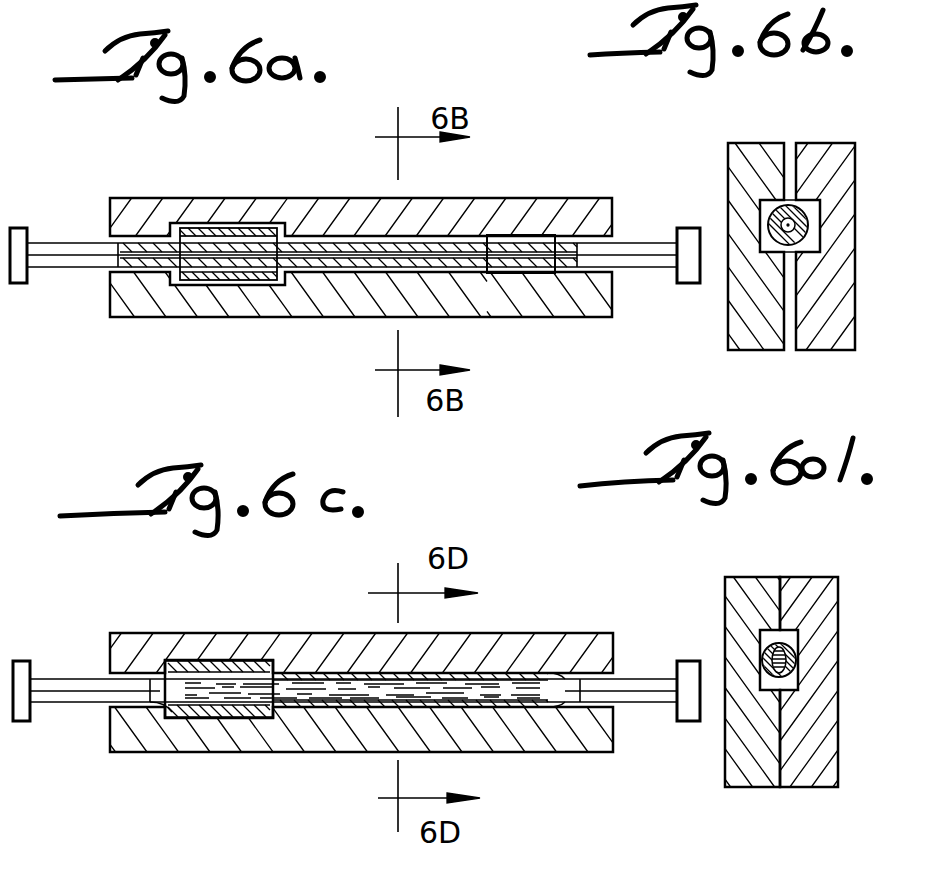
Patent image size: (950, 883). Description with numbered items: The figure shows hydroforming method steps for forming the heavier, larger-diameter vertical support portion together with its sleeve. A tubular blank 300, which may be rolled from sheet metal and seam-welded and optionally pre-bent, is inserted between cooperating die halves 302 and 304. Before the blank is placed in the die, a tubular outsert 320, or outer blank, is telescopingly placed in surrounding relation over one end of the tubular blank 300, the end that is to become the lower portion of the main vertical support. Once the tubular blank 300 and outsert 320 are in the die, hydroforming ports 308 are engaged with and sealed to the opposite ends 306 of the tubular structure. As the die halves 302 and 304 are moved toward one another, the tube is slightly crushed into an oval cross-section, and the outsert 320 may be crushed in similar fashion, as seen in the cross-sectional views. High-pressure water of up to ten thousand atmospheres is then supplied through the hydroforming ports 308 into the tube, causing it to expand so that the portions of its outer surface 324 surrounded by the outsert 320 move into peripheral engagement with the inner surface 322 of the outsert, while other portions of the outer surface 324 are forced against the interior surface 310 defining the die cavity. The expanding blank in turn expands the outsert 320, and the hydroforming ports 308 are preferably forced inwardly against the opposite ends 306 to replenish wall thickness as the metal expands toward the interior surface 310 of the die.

In FIG. 6A, the tubular blank 300 is at (160, 243).
In FIG. 6B, the tubular blank 300 is at (799, 244).
In FIG. 6C, the tubular blank 300 is at (552, 677).
In FIG. 6D, the tubular blank 300 is at (764, 643).
In FIG. 6A, the die half 302 is at (458, 207).
In FIG. 6B, the die half 302 is at (750, 152).
In FIG. 6C, the die half 302 is at (320, 648).
In FIG. 6D, the die half 302 is at (737, 757).
In FIG. 6A, the die half 304 is at (580, 313).
In FIG. 6B, the die half 304 is at (823, 152).
In FIG. 6C, the die half 304 is at (503, 740).
In FIG. 6D, the die half 304 is at (812, 770).
In FIG. 6A, the opposite ends of the tubular structure 306 is at (135, 268).
In FIG. 6C, the opposite ends of the tubular structure 306 is at (152, 707).
In FIG. 6A, the hydroforming ports 308 is at (53, 268).
In FIG. 6C, the hydroforming ports 308 is at (53, 704).
In FIG. 6A, the interior surface of the die 310 is at (488, 262).
In FIG. 6B, the interior surface of the die 310 is at (766, 215).
In FIG. 6D, the interior surface of the die 310 is at (775, 630).
In FIG. 6A, the tubular outsert 320 is at (217, 228).
In FIG. 6C, the tubular outsert 320 is at (200, 665).
In FIG. 6A, the inner surface of outsert 322 is at (233, 236).
In FIG. 6A, the outer surface of tubular blank 324 is at (312, 244).
In FIG. 6B, the outer surface of tubular blank 324 is at (777, 222).
In FIG. 6D, the outer surface of tubular blank 324 is at (764, 675).